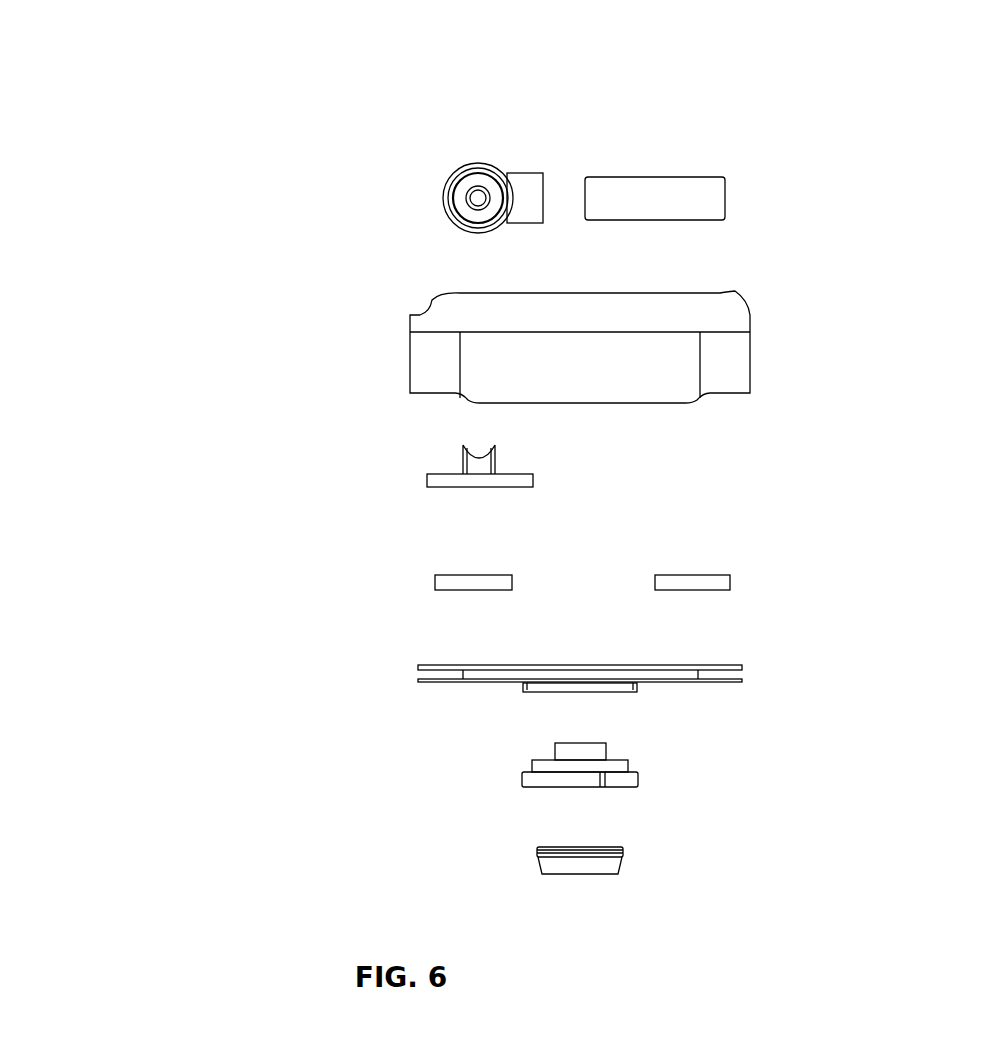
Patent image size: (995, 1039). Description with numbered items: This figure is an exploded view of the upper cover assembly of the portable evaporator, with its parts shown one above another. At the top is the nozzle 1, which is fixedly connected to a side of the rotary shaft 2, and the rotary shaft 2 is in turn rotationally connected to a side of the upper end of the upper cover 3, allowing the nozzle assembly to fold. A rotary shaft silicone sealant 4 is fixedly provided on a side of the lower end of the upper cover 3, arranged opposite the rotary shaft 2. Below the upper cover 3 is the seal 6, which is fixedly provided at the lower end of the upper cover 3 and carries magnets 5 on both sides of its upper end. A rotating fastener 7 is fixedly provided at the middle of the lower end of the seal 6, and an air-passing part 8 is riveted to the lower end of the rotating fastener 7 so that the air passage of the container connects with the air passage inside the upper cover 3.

The nozzle 1 is at (653, 155).
The rotary shaft 2 is at (423, 199).
The upper cover 3 is at (390, 331).
The rotary shaft silicone sealant 4 is at (415, 463).
The magnets 5 is at (403, 585).
The seal 6 is at (403, 673).
The rotating fastener 7 is at (472, 767).
The air-passing part 8 is at (477, 866).